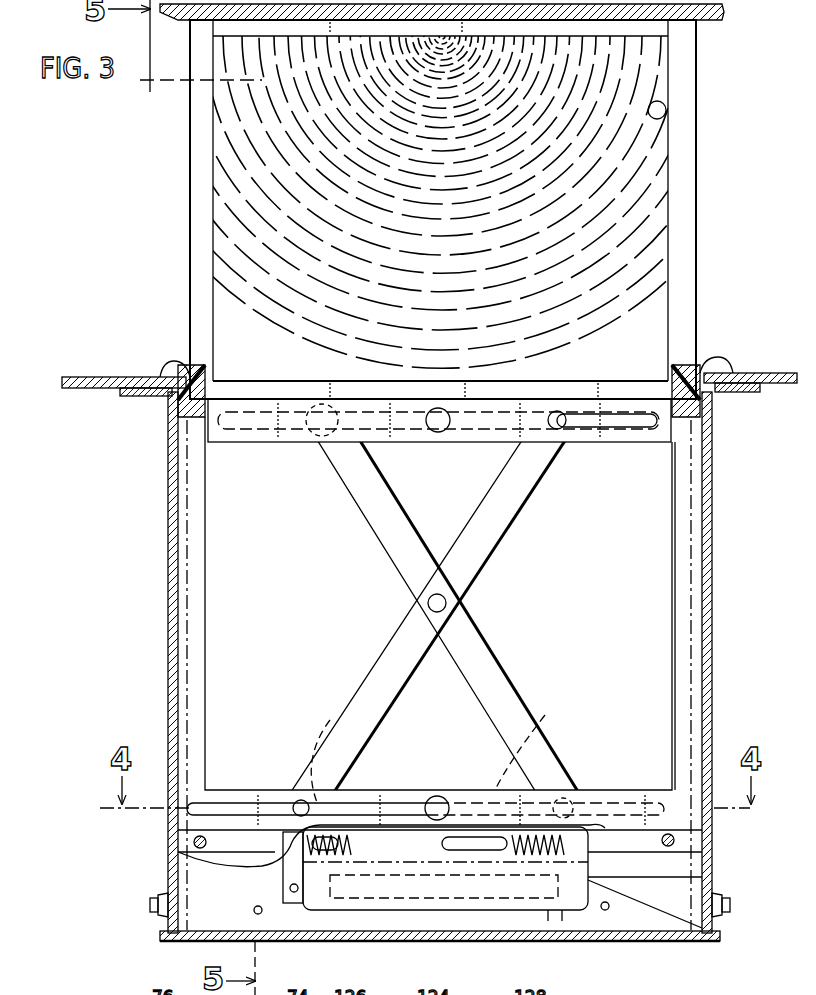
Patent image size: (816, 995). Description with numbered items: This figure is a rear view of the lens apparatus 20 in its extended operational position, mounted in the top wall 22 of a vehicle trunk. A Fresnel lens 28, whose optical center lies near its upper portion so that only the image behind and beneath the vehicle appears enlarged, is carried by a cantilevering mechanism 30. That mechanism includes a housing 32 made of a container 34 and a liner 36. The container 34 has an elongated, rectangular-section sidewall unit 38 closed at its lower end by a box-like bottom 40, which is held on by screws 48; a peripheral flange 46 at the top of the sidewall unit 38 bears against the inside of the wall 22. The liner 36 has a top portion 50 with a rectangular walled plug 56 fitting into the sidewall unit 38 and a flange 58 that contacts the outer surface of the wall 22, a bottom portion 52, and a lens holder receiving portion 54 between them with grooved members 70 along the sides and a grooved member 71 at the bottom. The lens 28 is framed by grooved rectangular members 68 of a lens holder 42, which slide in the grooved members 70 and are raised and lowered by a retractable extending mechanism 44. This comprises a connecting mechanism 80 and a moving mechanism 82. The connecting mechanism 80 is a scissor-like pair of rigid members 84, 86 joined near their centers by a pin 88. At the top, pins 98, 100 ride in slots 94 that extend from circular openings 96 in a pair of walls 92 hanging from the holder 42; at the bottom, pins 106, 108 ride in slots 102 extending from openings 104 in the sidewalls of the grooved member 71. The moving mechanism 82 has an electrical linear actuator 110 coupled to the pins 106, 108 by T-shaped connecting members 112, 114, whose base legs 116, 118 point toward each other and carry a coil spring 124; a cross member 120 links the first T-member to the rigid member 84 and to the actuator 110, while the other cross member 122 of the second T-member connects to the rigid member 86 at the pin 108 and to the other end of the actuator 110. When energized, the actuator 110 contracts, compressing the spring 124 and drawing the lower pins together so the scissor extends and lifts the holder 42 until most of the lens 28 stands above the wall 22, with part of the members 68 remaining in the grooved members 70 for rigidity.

The lens apparatus 20 is at (713, 264).
The top wall 22 is at (106, 377).
The Fresnel lens 28 is at (450, 334).
The cantilevering mechanism 30 is at (150, 338).
The housing 32 is at (165, 500).
The container 34 is at (712, 707).
The liner 36 is at (700, 700).
The sidewall unit 38 is at (712, 739).
The bottom 40 is at (620, 938).
The lens holder 42 is at (705, 160).
The retractable extending mechanism 44 is at (322, 712).
The peripheral flange 46 is at (738, 392).
The screws 48 is at (158, 908).
The top portion 50 is at (717, 347).
The bottom portion 52 is at (700, 856).
The lens holder receiving portion 54 is at (668, 752).
The walled plug 56 is at (218, 378).
The flange 58 is at (733, 364).
The grooved rectangular members 68 is at (660, 104).
The grooved members 70 is at (672, 570).
The grooved member 71 is at (378, 790).
The connecting mechanism 80 is at (517, 684).
The moving mechanism 82 is at (303, 920).
The rigid member 84 is at (530, 501).
The rigid member 86 is at (410, 523).
The pin 88 is at (448, 603).
The walls 92 is at (300, 453).
The slot 94 is at (272, 453).
The circular opening 96 is at (434, 444).
The pin 98 is at (570, 440).
The pin 100 is at (330, 444).
The slot 102 is at (238, 795).
The opening 104 is at (442, 794).
The pin 106 is at (298, 798).
The pin 108 is at (575, 798).
The electrical linear actuator 110 is at (480, 912).
The T-shaped connecting member 112 is at (282, 875).
The T-shaped connecting member 114 is at (597, 887).
The base leg 116 is at (355, 856).
The base leg 118 is at (485, 850).
The cross member 120 is at (283, 870).
The screw 122 is at (676, 856).
The coil spring 124 is at (355, 805).